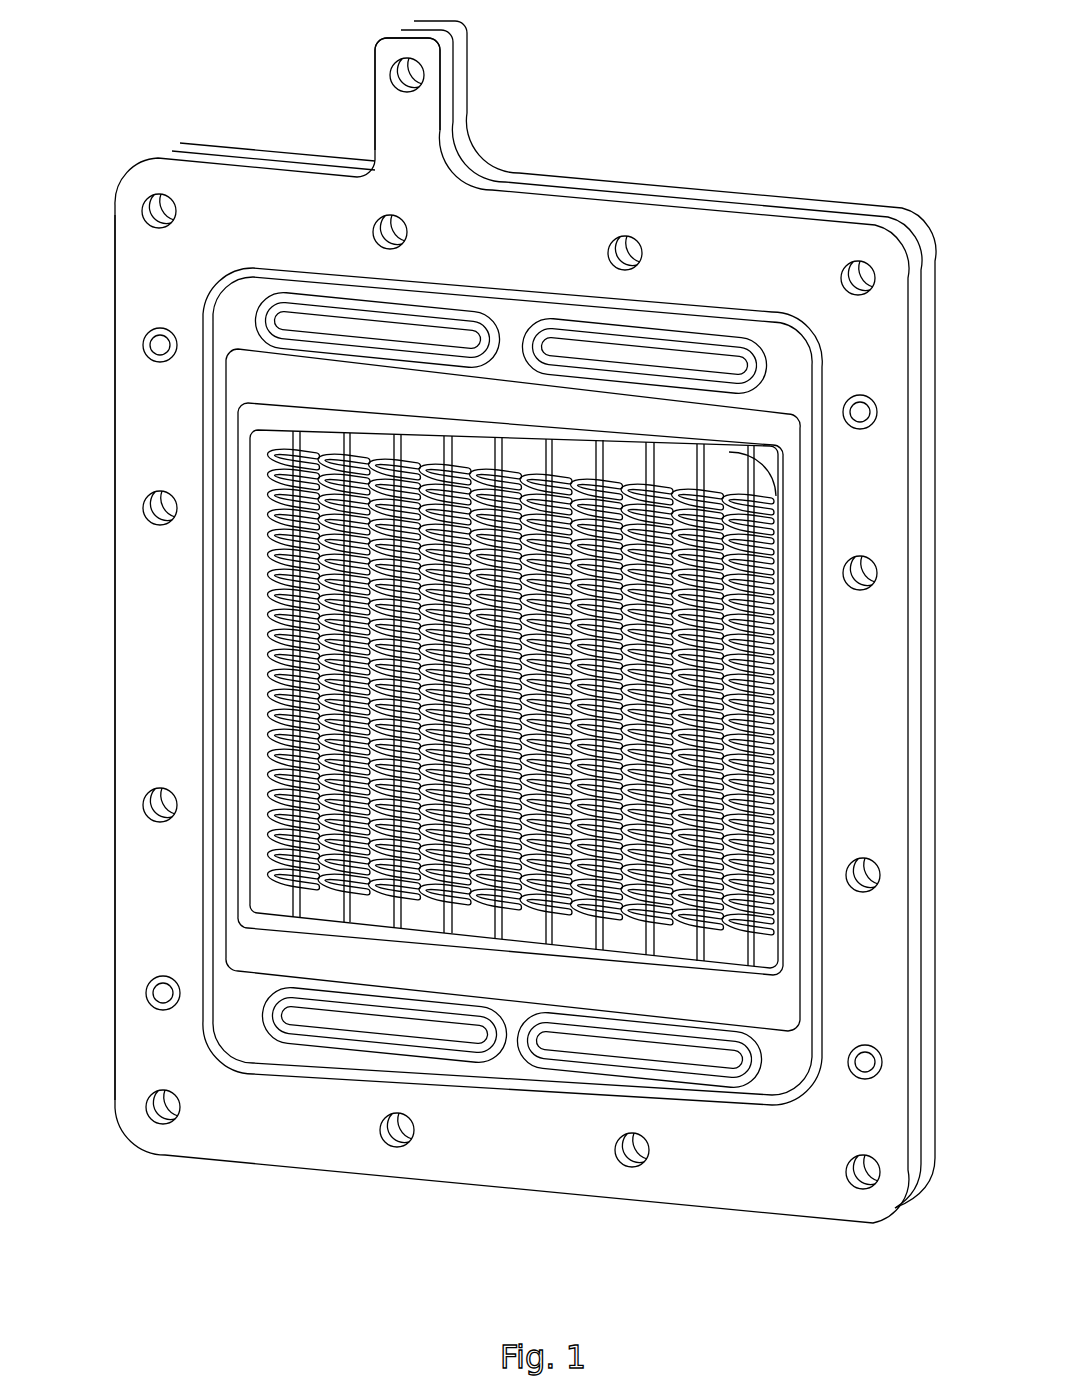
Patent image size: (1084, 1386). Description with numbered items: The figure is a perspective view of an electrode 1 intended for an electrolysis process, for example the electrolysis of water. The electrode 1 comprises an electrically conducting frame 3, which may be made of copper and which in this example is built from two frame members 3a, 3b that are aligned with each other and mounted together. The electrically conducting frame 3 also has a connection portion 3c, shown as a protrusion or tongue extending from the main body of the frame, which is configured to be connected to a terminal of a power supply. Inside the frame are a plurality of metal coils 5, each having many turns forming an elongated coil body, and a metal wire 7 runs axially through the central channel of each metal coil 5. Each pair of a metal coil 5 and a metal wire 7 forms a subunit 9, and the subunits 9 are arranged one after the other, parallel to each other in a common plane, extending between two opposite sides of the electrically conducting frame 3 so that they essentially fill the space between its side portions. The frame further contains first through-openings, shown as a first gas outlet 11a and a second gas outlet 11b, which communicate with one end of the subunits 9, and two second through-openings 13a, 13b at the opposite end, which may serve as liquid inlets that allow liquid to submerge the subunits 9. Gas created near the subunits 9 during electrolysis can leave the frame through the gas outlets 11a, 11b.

The electrode 1 is at (862, 37).
The electrically conducting frame 3 is at (151, 151).
The frame member 3a is at (113, 213).
The frame member 3b is at (223, 160).
The connection portion 3c is at (374, 52).
The metal coil 5 is at (320, 453).
The metal wire 7 is at (352, 447).
The subunit 9 is at (272, 613).
The first gas outlet 11a is at (449, 330).
The second gas outlet 11b is at (664, 355).
The second through-opening 13a is at (452, 1030).
The second through-opening 13b is at (593, 1040).